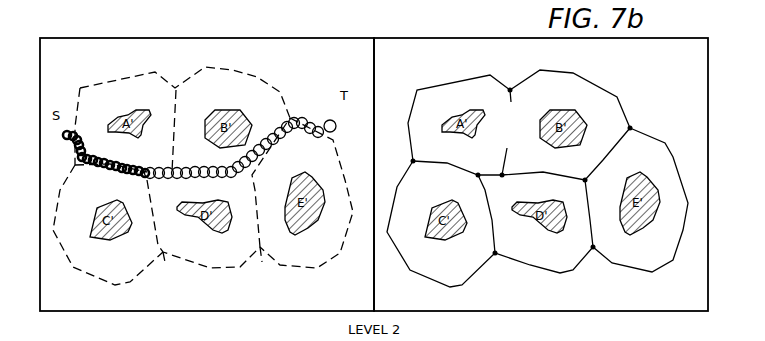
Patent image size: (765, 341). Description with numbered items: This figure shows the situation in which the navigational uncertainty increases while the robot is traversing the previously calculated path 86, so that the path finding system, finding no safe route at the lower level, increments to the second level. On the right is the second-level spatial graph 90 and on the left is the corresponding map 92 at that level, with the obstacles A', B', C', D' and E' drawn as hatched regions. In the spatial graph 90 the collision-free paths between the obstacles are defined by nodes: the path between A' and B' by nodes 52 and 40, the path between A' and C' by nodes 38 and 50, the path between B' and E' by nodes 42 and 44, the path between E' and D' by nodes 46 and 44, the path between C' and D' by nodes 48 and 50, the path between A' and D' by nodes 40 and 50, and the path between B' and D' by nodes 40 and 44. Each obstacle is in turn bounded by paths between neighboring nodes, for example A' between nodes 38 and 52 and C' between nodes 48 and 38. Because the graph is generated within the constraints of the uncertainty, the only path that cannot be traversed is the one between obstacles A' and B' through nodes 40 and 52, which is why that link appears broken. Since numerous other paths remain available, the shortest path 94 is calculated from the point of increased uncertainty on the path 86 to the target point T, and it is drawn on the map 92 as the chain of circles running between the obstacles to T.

The map 92 is at (190, 38).
The spatial graph 90 is at (458, 39).
The path 86 is at (148, 173).
The shortest path 94 is at (292, 118).
The node 52 is at (510, 90).
The node 38 is at (413, 161).
The node 50 is at (478, 175).
The node 40 is at (502, 175).
The node 42 is at (630, 128).
The node 44 is at (585, 180).
The node 46 is at (593, 247).
The node 48 is at (495, 253).